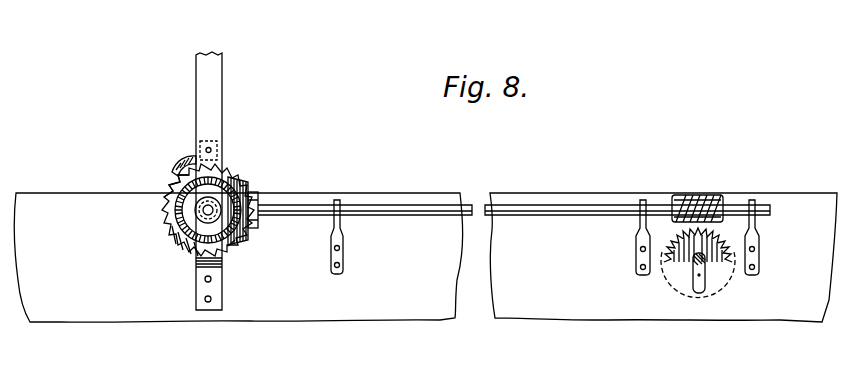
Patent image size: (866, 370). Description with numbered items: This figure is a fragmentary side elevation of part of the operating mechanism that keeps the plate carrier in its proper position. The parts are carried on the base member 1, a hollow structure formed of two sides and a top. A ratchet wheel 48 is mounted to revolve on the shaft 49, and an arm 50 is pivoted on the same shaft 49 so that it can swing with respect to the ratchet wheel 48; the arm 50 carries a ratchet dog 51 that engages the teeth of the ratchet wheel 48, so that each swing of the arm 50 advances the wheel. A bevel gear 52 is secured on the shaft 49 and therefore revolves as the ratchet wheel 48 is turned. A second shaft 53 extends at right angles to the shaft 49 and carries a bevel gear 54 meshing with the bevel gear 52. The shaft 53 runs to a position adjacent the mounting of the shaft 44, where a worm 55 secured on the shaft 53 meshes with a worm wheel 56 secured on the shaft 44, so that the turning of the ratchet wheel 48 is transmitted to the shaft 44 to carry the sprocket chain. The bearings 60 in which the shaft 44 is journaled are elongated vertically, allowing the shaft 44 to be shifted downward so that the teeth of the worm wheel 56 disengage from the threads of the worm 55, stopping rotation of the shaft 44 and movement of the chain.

The base member 1 is at (412, 316).
The shaft 44 is at (705, 264).
The ratchet wheel 48 is at (173, 242).
The shaft 49 is at (217, 204).
The arm 50 is at (215, 118).
The ratchet dog 51 is at (182, 162).
The bevel gear 52 is at (176, 207).
The shaft 53 is at (428, 209).
The bevel gear 54 is at (251, 205).
The worm 55 is at (706, 199).
The worm wheel 56 is at (678, 258).
The bearings 60 is at (697, 281).